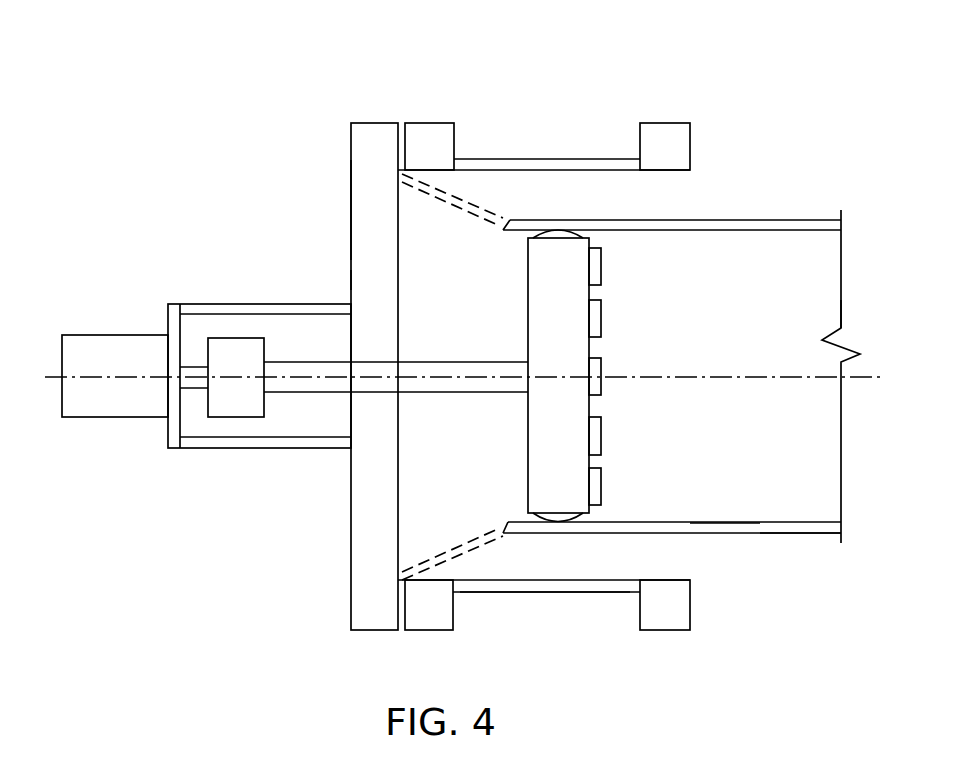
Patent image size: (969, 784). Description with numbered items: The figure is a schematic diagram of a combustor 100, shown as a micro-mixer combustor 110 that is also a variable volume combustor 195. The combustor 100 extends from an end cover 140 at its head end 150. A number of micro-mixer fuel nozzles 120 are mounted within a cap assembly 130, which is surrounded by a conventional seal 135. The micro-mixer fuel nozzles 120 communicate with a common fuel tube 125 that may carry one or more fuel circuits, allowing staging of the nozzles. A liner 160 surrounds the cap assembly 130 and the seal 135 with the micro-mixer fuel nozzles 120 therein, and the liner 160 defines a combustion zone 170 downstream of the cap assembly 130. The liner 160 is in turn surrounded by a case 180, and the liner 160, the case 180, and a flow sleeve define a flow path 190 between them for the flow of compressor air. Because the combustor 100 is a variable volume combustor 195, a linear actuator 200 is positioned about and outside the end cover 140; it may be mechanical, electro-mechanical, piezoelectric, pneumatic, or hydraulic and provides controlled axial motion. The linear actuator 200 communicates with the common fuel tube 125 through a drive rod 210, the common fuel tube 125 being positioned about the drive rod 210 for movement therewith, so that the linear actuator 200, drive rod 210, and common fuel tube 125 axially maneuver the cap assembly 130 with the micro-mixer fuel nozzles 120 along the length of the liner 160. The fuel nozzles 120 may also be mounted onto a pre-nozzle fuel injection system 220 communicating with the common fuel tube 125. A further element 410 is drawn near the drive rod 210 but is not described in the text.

The combustor 100 is at (206, 74).
The micro-mixer combustor 110 is at (343, 142).
The micro-mixer fuel nozzles 120 is at (601, 318).
The common fuel tube 125 is at (470, 362).
The cap assembly 130 is at (607, 242).
The seal 135 is at (533, 236).
The end cover 140 is at (351, 210).
The head end 150 is at (452, 238).
The liner 160 is at (820, 534).
The combustion zone 170 is at (811, 360).
The case 180 is at (545, 593).
The flow path 190 is at (692, 562).
The variable volume combustor 195 is at (342, 277).
The linear actuator 200 is at (111, 333).
The drive rod 210 is at (196, 365).
The pre-nozzle fuel injection system 220 is at (599, 526).
The coupling block 410 is at (348, 360).